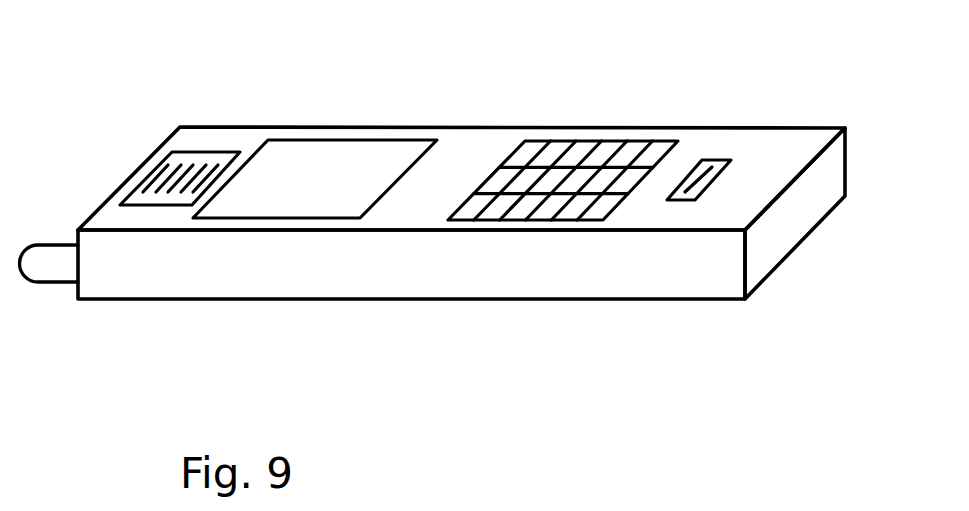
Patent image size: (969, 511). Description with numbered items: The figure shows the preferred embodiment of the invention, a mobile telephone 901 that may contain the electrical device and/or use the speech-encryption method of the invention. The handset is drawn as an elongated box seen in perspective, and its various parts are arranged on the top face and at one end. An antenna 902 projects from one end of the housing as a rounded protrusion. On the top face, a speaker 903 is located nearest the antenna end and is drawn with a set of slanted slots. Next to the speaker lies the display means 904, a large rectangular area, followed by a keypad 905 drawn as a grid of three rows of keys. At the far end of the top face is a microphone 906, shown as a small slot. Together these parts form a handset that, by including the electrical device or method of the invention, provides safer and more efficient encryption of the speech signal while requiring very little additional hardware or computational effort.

The mobile telephone 901 is at (348, 300).
The antenna 902 is at (53, 287).
The speaker 903 is at (153, 167).
The display means 904 is at (335, 155).
The keypad 905 is at (555, 155).
The microphone 906 is at (720, 159).